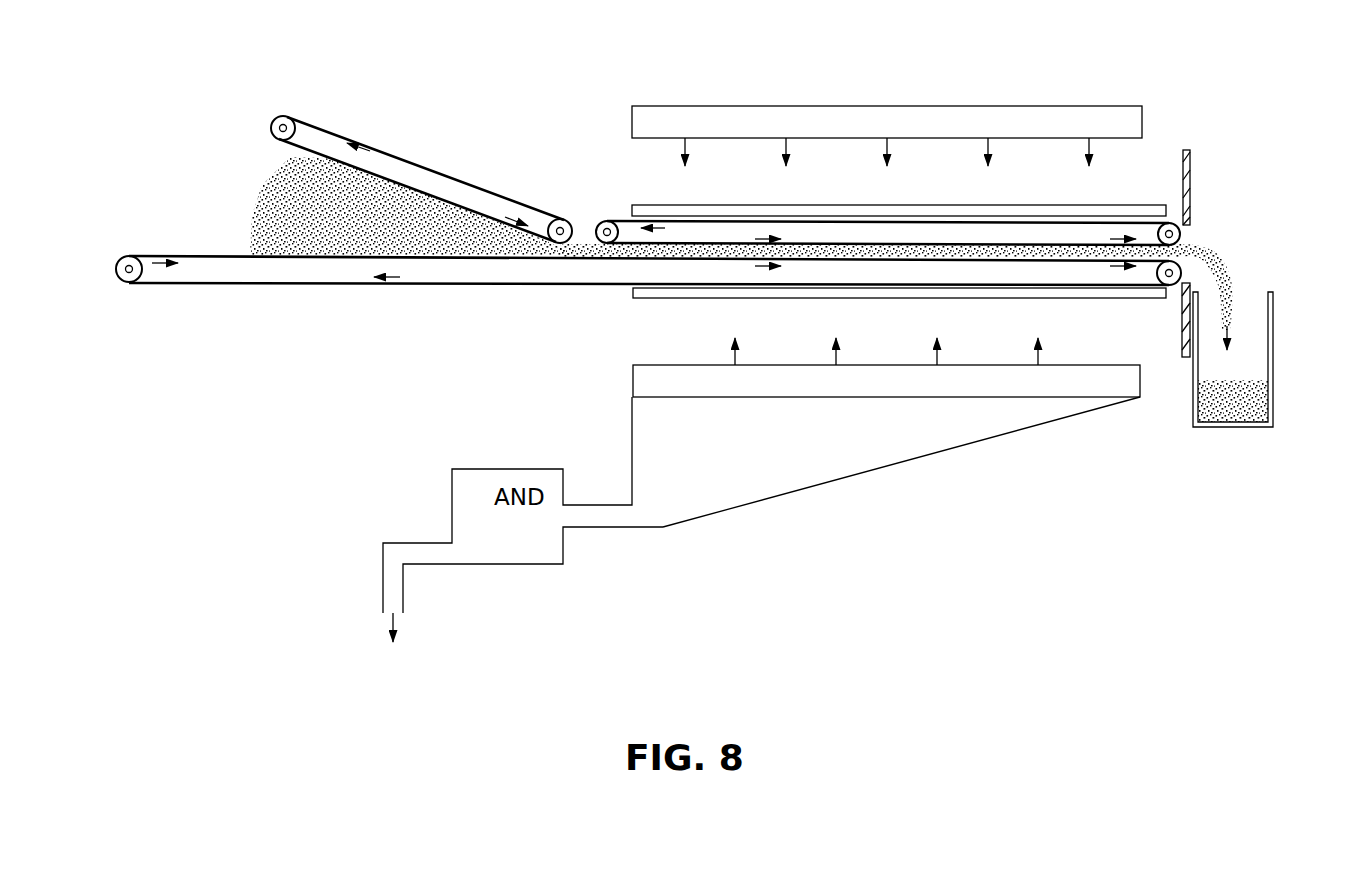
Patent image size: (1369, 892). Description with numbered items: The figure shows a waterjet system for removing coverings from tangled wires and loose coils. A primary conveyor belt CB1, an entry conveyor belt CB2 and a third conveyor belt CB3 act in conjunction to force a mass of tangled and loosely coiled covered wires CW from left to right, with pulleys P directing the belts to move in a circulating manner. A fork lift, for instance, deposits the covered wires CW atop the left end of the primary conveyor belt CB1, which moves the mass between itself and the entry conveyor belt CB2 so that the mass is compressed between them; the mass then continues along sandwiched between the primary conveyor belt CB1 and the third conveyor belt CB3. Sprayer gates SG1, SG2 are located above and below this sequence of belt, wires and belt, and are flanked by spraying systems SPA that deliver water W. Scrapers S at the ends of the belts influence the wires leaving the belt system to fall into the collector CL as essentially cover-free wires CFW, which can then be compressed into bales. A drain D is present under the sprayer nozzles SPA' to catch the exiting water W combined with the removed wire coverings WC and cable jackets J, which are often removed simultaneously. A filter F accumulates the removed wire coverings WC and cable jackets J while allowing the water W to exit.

The pulleys P is at (277, 118).
The primary conveyor belt CB1 is at (160, 285).
The entry conveyor belt CB2 is at (423, 152).
The third conveyor belt CB3 is at (613, 220).
The covered wires CW is at (268, 190).
The cover-free wires CFW is at (1241, 271).
The sprayer gate SG1 is at (1146, 204).
The sprayer gate SG2 is at (640, 300).
The spraying system SPA is at (887, 122).
The sprayer nozzles SPA' is at (886, 381).
The water W is at (752, 411).
The scrapers S is at (1194, 151).
The collector CL is at (1264, 379).
The drain D is at (800, 452).
The filter F is at (509, 567).
The cable jackets J is at (479, 509).
The wire coverings WC is at (528, 544).